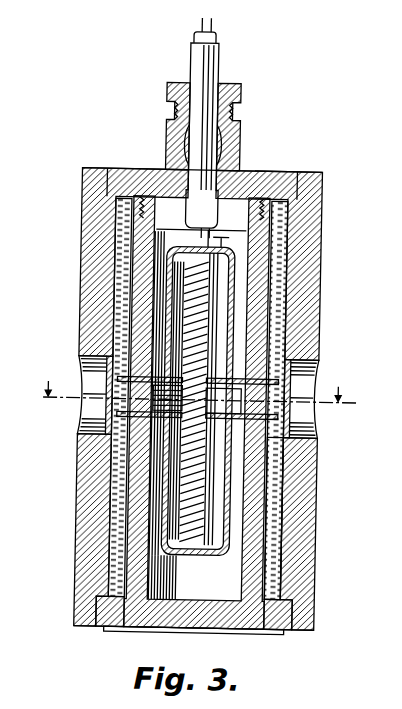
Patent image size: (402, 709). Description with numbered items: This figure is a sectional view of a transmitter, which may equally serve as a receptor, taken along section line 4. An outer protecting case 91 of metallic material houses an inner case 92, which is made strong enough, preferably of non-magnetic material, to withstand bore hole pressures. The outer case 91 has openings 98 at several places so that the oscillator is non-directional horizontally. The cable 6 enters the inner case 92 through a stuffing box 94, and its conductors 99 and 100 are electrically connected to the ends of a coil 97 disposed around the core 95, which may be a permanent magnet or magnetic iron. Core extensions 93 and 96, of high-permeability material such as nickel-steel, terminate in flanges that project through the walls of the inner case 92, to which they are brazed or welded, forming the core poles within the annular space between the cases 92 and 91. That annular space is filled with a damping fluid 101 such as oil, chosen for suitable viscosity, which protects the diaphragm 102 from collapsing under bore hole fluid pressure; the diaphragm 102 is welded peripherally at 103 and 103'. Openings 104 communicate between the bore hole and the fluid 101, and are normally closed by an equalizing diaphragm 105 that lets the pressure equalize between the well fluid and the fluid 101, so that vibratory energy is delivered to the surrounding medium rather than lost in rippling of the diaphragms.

The section line 4- 4 is at (199, 399).
The cable 6 is at (203, 70).
The outer protecting case 91 is at (259, 335).
The inner case 92 is at (147, 261).
The core extension 93 is at (231, 257).
The stuffing box 94 is at (237, 145).
The core 95 is at (217, 552).
The core extension 96 is at (232, 507).
The coil 97 is at (220, 286).
The openings 98 is at (90, 430).
The conductor 99 is at (196, 24).
The conductor 100 is at (207, 24).
The fluid 101 is at (282, 530).
The diaphragm 102 is at (112, 400).
The peripheral weld 103 is at (223, 264).
The peripheral weld 103' is at (218, 532).
The openings 104 is at (111, 619).
The equalizing diaphragm 105 is at (119, 629).